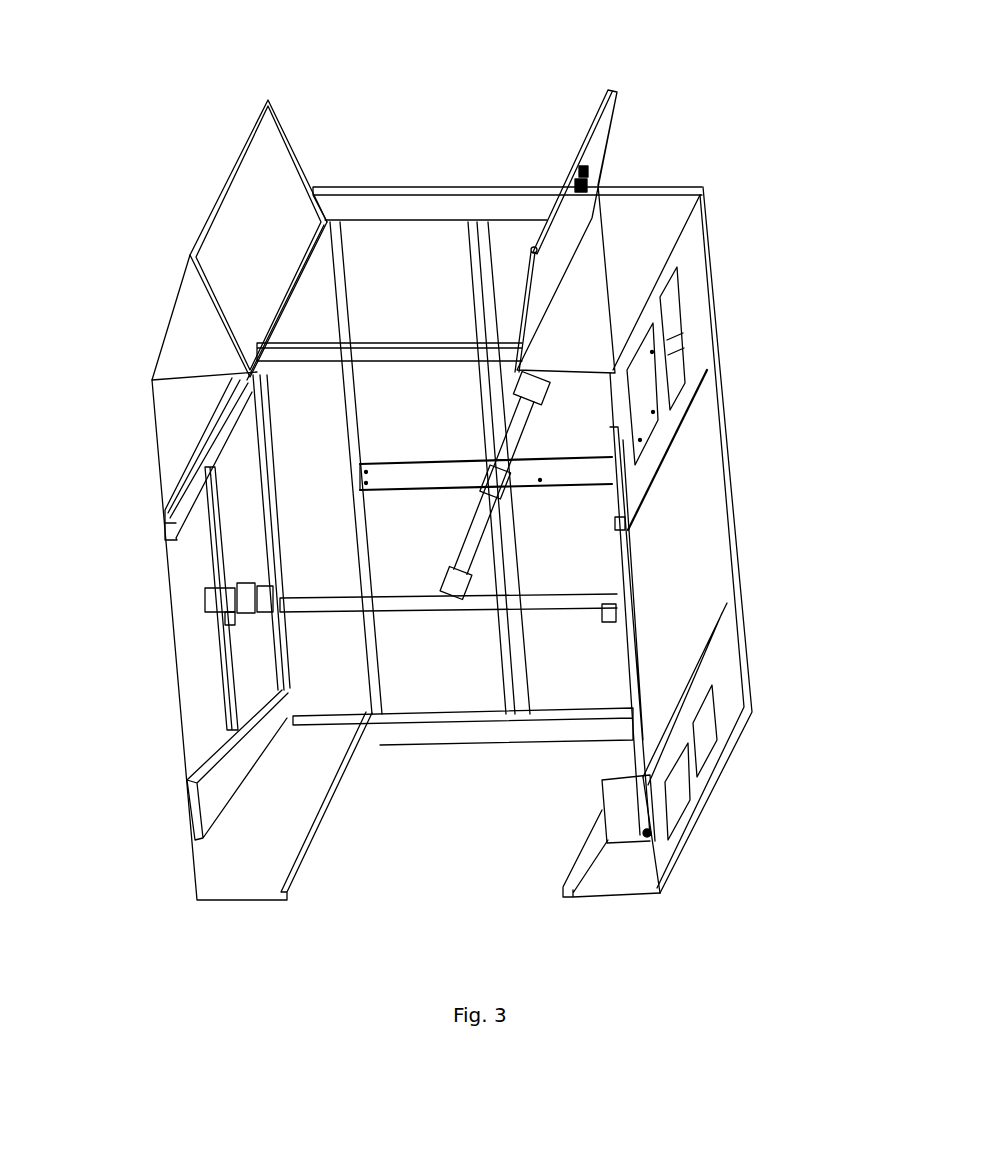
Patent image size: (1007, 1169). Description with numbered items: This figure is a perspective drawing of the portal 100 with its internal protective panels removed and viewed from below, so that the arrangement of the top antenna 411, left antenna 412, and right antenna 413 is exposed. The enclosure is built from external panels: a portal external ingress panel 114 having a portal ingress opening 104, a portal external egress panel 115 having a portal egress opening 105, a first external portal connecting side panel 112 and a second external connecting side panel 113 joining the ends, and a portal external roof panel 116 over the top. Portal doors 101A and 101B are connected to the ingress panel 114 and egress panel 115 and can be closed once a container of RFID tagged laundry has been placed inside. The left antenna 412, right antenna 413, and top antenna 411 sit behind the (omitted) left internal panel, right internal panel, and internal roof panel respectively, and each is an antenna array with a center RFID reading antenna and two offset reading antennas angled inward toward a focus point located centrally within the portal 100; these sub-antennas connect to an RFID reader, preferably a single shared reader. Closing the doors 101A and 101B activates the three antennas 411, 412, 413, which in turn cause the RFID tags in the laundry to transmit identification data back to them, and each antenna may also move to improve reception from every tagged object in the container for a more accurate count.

The portal 100 is at (486, 65).
The portal door 101A is at (240, 212).
The portal door 101B is at (598, 152).
The portal ingress opening 104 is at (368, 218).
The portal egress opening 105 is at (455, 745).
The first external portal connecting side panel 112 is at (150, 440).
The second external connecting side panel 113 is at (696, 320).
The portal external ingress panel 114 is at (668, 205).
The portal external egress panel 115 is at (620, 897).
The portal external roof panel 116 is at (737, 517).
The top antenna 411 is at (475, 557).
The left antenna 412 is at (240, 593).
The right antenna 413 is at (603, 640).